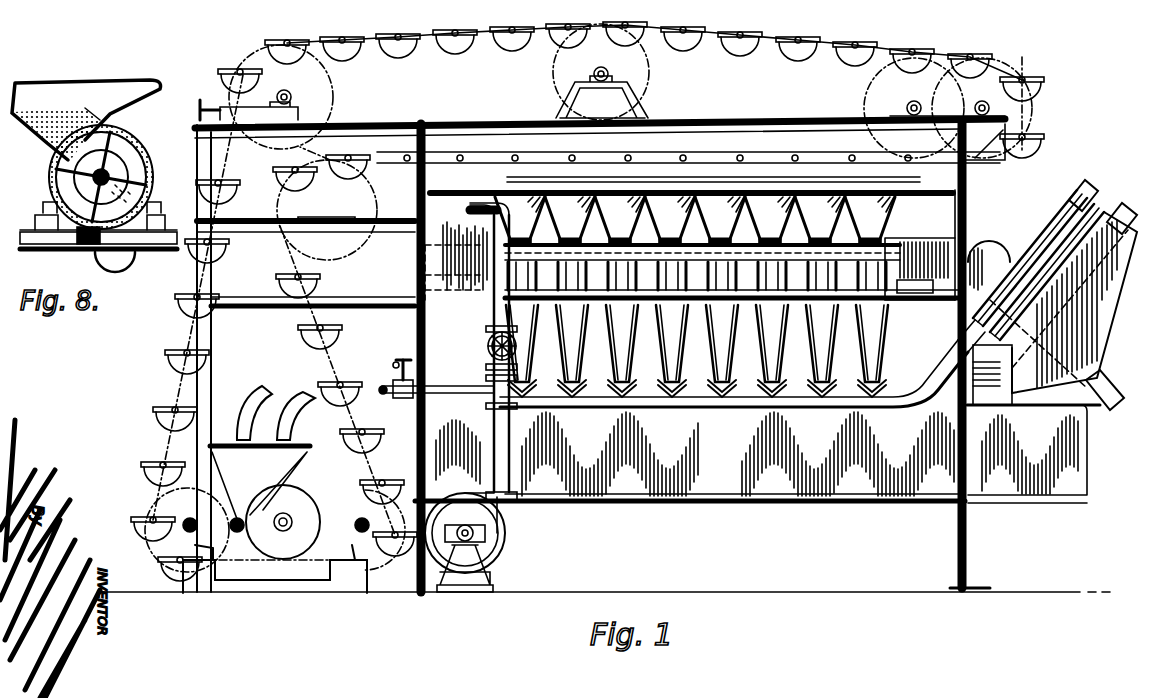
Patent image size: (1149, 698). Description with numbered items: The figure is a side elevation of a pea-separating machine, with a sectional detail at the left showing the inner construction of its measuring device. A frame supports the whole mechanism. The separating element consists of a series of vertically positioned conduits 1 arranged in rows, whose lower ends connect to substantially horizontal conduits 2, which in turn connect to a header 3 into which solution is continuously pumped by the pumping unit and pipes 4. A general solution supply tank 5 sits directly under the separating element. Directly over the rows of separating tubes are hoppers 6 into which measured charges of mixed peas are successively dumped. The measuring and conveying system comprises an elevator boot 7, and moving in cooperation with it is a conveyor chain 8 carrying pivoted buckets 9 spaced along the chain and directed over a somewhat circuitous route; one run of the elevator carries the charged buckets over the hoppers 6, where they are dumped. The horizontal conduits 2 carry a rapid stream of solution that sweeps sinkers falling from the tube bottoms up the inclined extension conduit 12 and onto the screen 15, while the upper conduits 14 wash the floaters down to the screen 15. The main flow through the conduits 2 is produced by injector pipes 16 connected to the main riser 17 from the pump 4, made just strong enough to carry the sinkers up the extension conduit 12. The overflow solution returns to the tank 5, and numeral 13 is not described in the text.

The separating conduits 1 is at (590, 335).
The horizontal conduits 2 is at (604, 398).
The header 3 is at (456, 261).
The pumping unit and pipes 4 is at (490, 532).
The solution supply tank 5 is at (751, 454).
The hoppers 6 is at (612, 213).
The elevator boot 7 is at (297, 500).
The conveyor chain 8 is at (337, 352).
The pivoted buckets 9 is at (305, 330).
The overflow pipe / extension conduit 12 is at (952, 338).
The discharge chute 13 is at (1135, 228).
The upper conduits 14 is at (925, 250).
The screen 15 is at (398, 372).
The injector pipes 16 is at (432, 412).
The main riser 17 is at (510, 452).